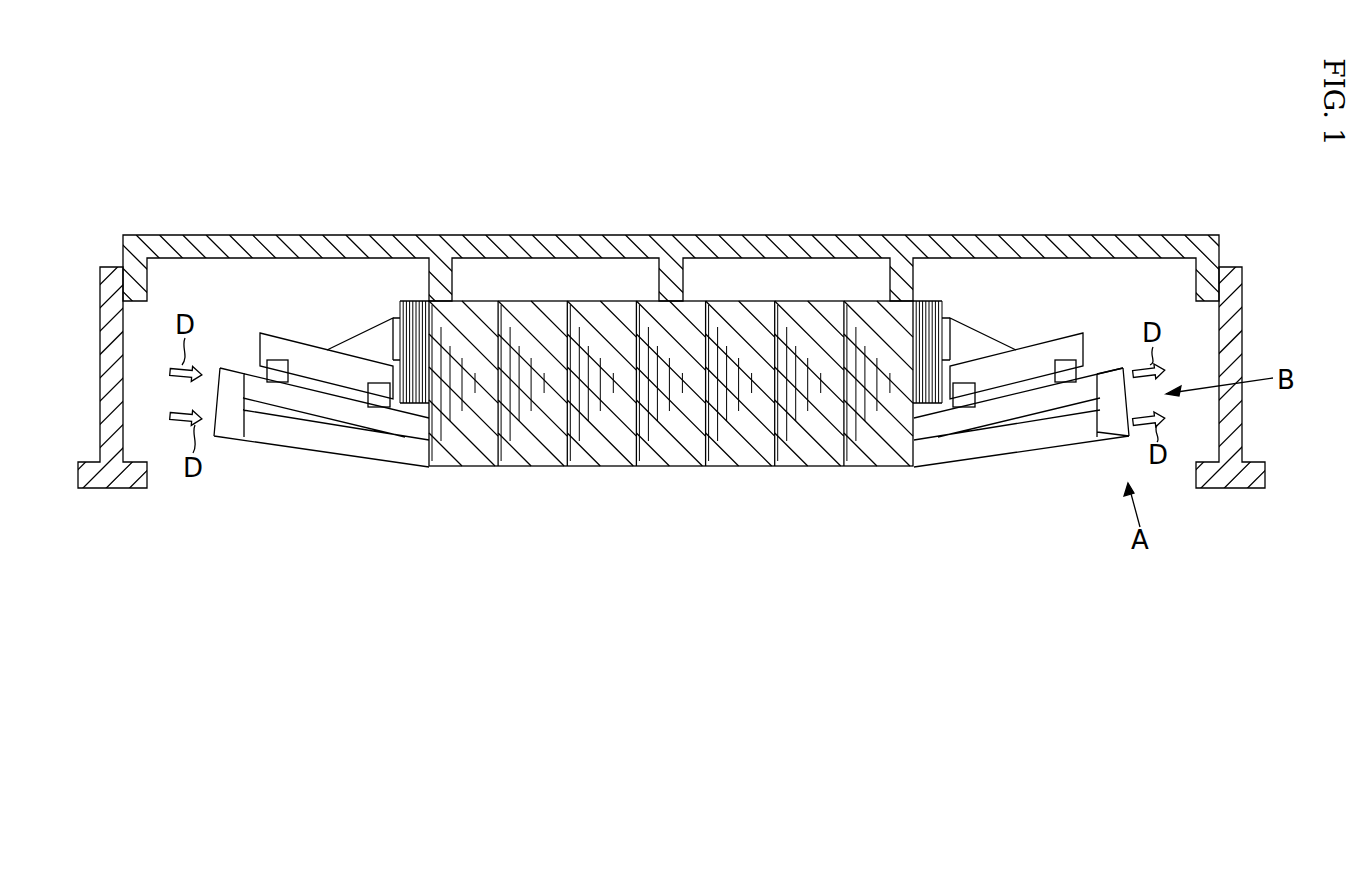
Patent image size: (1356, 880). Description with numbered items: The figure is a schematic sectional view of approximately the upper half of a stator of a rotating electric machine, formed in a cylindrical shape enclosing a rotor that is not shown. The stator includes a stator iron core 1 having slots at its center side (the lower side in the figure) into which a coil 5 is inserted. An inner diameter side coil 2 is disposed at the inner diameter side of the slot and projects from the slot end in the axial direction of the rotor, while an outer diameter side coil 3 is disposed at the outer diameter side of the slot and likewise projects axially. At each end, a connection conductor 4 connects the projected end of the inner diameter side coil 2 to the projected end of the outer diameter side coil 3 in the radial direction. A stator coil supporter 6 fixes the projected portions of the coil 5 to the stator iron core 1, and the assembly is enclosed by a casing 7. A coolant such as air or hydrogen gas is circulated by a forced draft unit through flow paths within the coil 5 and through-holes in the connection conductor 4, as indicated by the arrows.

The stator iron core 1 is at (883, 467).
The inner diameter side coil 2 is at (978, 455).
The outer diameter side coil 3 is at (1040, 410).
The connection conductor 4 is at (1105, 440).
The coil 5 is at (671, 457).
The stator coil supporter 6 is at (283, 333).
The casing 7 is at (272, 235).